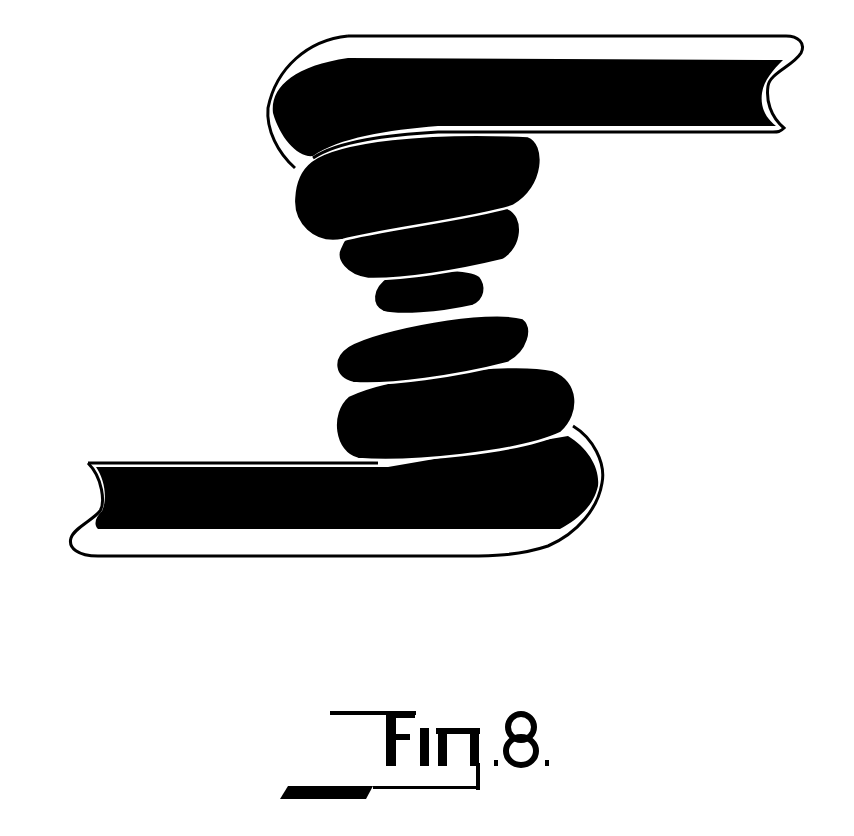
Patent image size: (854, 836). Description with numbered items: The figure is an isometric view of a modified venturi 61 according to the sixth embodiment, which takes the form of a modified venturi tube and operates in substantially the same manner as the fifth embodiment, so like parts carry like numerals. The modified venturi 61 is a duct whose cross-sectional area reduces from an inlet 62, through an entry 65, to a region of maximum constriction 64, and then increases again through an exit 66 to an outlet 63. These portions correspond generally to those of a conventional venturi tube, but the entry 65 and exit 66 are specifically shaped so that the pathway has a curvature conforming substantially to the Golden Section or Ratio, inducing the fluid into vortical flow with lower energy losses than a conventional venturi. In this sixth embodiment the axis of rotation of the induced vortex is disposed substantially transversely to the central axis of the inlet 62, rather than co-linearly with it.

The modified venturi 61 is at (425, 296).
The inlet 62 is at (690, 80).
The outlet 63 is at (98, 499).
The region of maximum constriction 64 is at (478, 278).
The entry 65 is at (290, 208).
The exit 66 is at (572, 392).